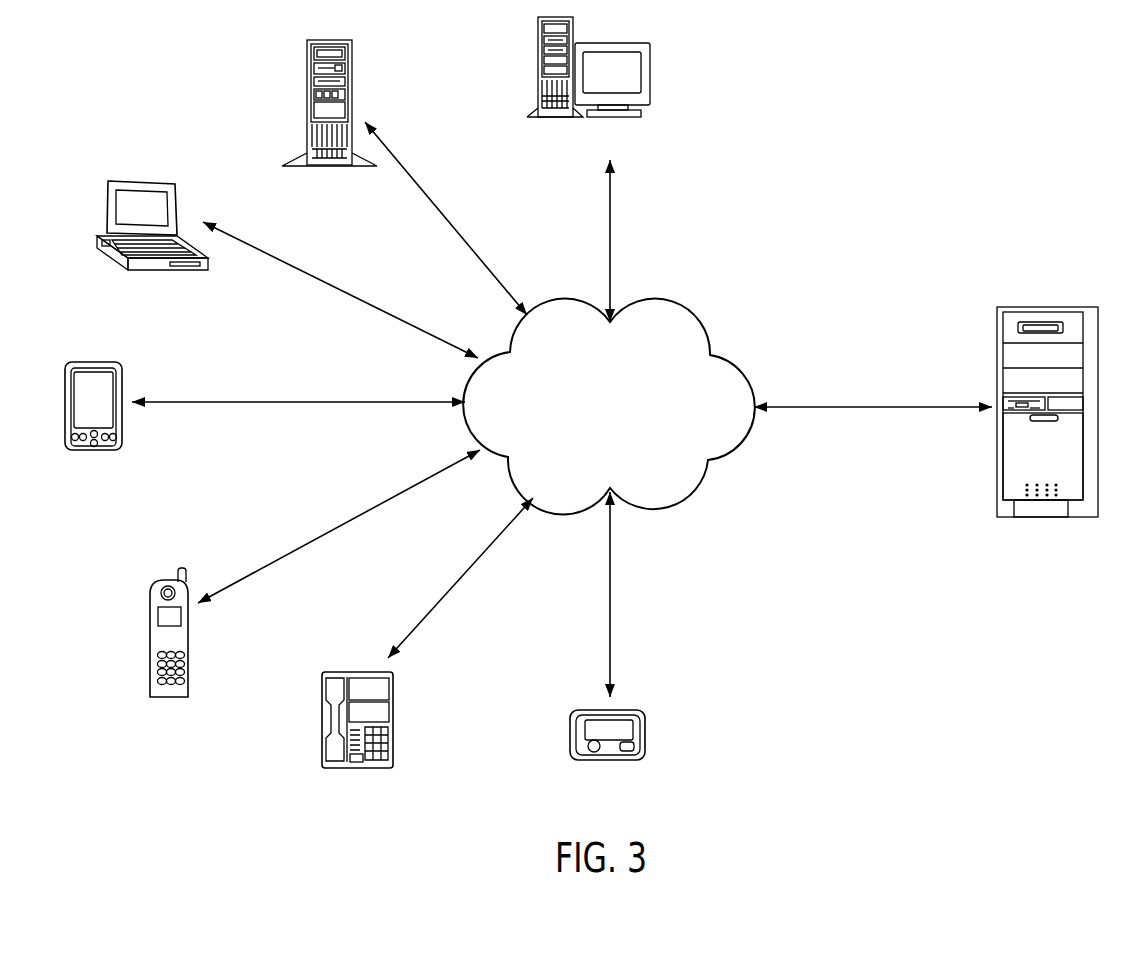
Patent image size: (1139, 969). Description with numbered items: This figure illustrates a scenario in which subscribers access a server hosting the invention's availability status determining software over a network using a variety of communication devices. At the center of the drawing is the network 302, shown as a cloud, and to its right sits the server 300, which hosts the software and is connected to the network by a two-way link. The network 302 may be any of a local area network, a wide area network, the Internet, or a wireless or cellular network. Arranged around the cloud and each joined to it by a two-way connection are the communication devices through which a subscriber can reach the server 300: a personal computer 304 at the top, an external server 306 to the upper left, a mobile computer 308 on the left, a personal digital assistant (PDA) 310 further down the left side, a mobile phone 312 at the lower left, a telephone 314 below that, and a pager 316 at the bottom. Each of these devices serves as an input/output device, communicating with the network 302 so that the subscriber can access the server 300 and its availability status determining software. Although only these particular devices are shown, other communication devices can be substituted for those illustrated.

The server 300 is at (1030, 581).
The network 302 is at (597, 431).
The personal computer 304 is at (573, 171).
The external server 306 is at (315, 224).
The mobile computer 308 is at (149, 324).
The personal digital assistant (PDA) 310 is at (80, 504).
The mobile phone 312 is at (157, 751).
The telephone 314 is at (345, 824).
The pager 316 is at (595, 811).